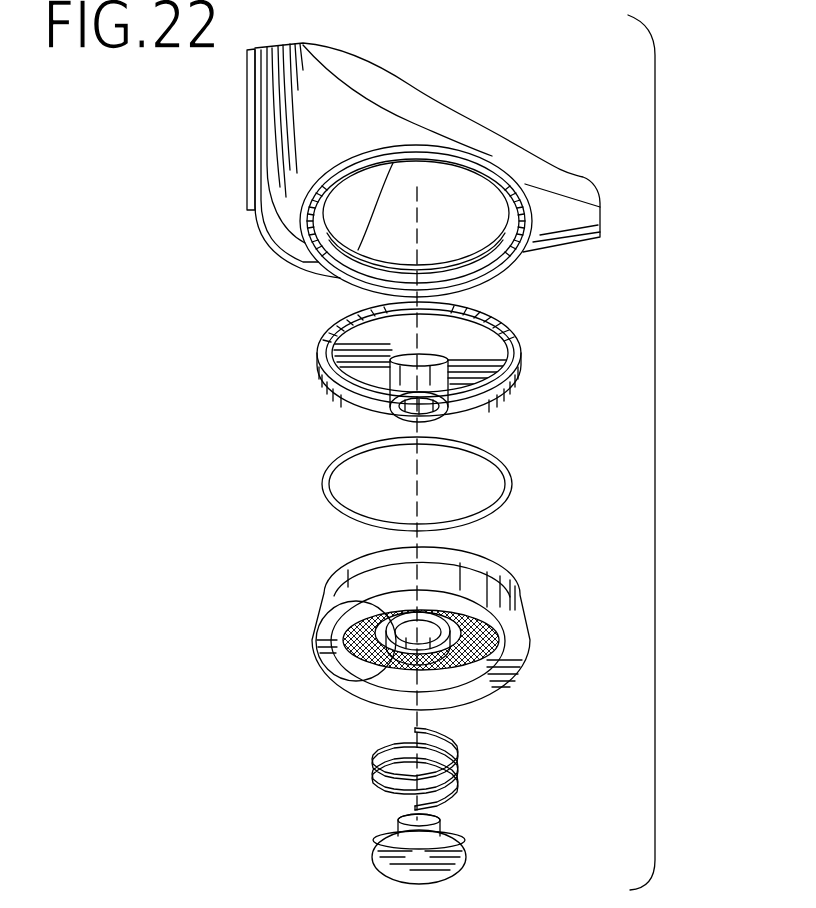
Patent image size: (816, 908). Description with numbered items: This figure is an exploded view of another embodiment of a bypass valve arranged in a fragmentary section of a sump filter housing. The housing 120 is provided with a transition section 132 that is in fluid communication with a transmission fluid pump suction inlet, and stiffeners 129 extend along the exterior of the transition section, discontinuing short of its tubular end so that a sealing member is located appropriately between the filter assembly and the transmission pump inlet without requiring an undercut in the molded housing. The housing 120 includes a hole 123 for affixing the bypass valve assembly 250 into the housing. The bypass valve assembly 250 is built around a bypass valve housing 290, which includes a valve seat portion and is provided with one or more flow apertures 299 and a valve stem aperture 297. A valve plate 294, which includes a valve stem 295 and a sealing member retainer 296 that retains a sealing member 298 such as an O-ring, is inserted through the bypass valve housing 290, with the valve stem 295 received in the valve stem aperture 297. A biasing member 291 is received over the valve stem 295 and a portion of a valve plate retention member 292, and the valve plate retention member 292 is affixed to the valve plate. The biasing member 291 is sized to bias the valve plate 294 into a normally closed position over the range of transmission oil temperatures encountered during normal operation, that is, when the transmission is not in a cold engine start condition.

The housing 120 is at (301, 36).
The transition section 132 is at (273, 72).
The stiffeners 129 is at (247, 143).
The hole 123 is at (330, 270).
The valve plate 294 is at (353, 318).
The sealing member retainer 296 is at (323, 363).
The valve stem 295 is at (383, 412).
The sealing member 298 is at (325, 498).
The bypass valve housing 290 is at (333, 590).
The valve stem aperture 297 is at (392, 620).
The flow apertures 299 is at (330, 672).
The biasing member 291 is at (377, 768).
The valve plate retention member 292 is at (373, 860).
The bypass valve assembly 250 is at (693, 452).